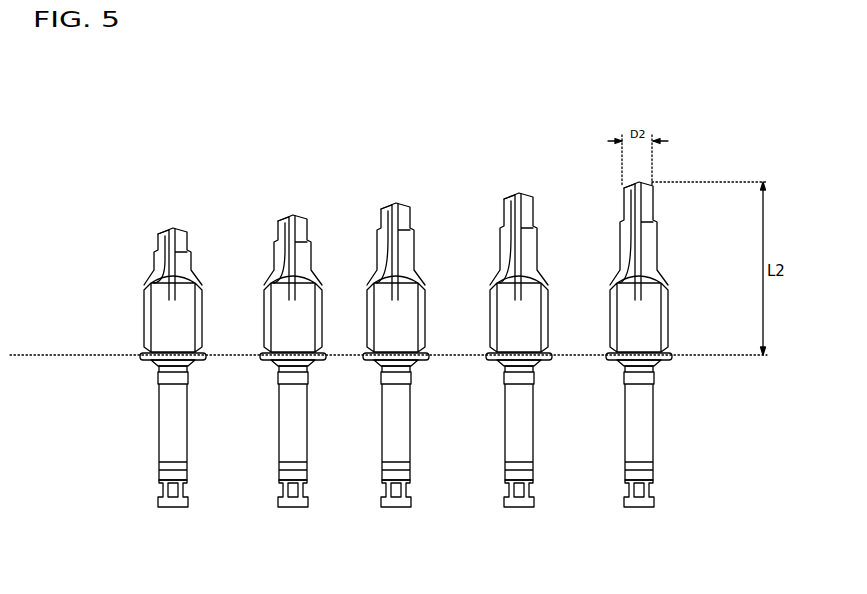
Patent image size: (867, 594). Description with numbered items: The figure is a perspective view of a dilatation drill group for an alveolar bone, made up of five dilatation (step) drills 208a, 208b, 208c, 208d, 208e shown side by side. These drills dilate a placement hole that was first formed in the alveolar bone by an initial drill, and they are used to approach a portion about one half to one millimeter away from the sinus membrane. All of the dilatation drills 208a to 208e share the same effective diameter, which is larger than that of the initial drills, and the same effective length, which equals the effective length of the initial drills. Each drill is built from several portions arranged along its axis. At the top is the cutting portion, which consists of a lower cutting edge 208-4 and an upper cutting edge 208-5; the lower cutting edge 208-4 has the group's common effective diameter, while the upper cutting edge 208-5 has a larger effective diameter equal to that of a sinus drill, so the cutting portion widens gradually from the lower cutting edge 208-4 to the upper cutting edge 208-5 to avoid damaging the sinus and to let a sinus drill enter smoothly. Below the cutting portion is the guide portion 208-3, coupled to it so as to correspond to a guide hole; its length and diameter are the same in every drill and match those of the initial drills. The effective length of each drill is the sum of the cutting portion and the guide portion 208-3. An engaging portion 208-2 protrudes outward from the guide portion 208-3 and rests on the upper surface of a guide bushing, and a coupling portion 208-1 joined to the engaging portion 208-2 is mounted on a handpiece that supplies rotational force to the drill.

The dilatation drill for an alveolar bone 208a is at (173, 508).
The dilatation drill for an alveolar bone 208b is at (293, 508).
The dilatation drill for an alveolar bone 208c is at (396, 508).
The dilatation drill for an alveolar bone 208d is at (519, 508).
The dilatation drill for an alveolar bone 208e is at (641, 366).
The coupling portion 208-1 is at (643, 442).
The engaging portion 208-2 is at (670, 360).
The guide portion 208-3 is at (645, 312).
The lower cutting edge 208-4 is at (624, 206).
The upper cutting edge 208-5 is at (656, 240).